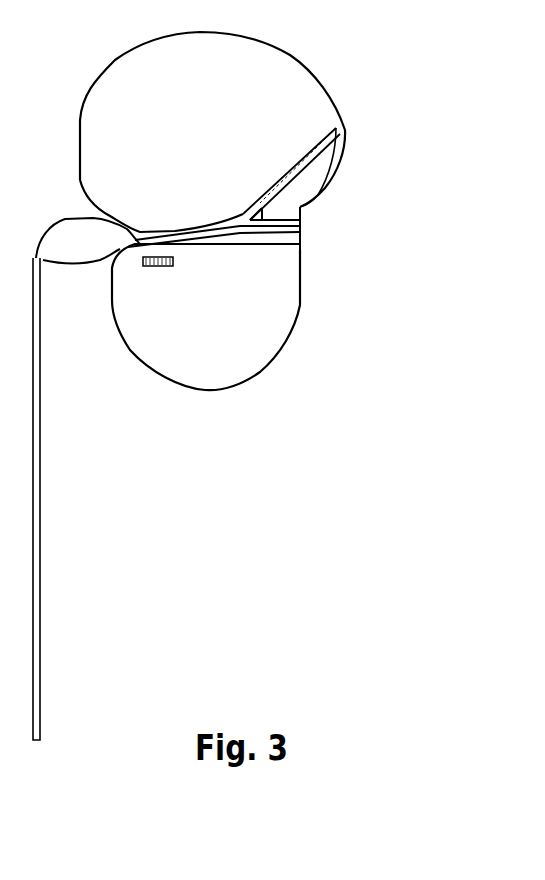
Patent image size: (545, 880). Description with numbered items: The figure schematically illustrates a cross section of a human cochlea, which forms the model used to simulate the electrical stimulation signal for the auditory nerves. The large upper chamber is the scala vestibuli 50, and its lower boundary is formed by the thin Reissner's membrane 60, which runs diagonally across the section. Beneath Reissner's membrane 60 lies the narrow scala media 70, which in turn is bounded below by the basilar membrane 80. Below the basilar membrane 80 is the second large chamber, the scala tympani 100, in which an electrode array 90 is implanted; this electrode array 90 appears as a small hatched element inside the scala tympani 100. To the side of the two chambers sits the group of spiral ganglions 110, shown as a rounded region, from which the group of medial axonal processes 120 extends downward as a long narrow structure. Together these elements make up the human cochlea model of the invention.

The scala vestibuli 50 is at (292, 91).
The Reissner's membrane 60 is at (318, 147).
The scala media 70 is at (305, 191).
The basilar membrane 80 is at (300, 217).
The electrode array 90 is at (196, 262).
The scala tympani 100 is at (223, 345).
The group of spiral ganglions 110 is at (87, 248).
The group of medial axonal processes 120 is at (43, 586).